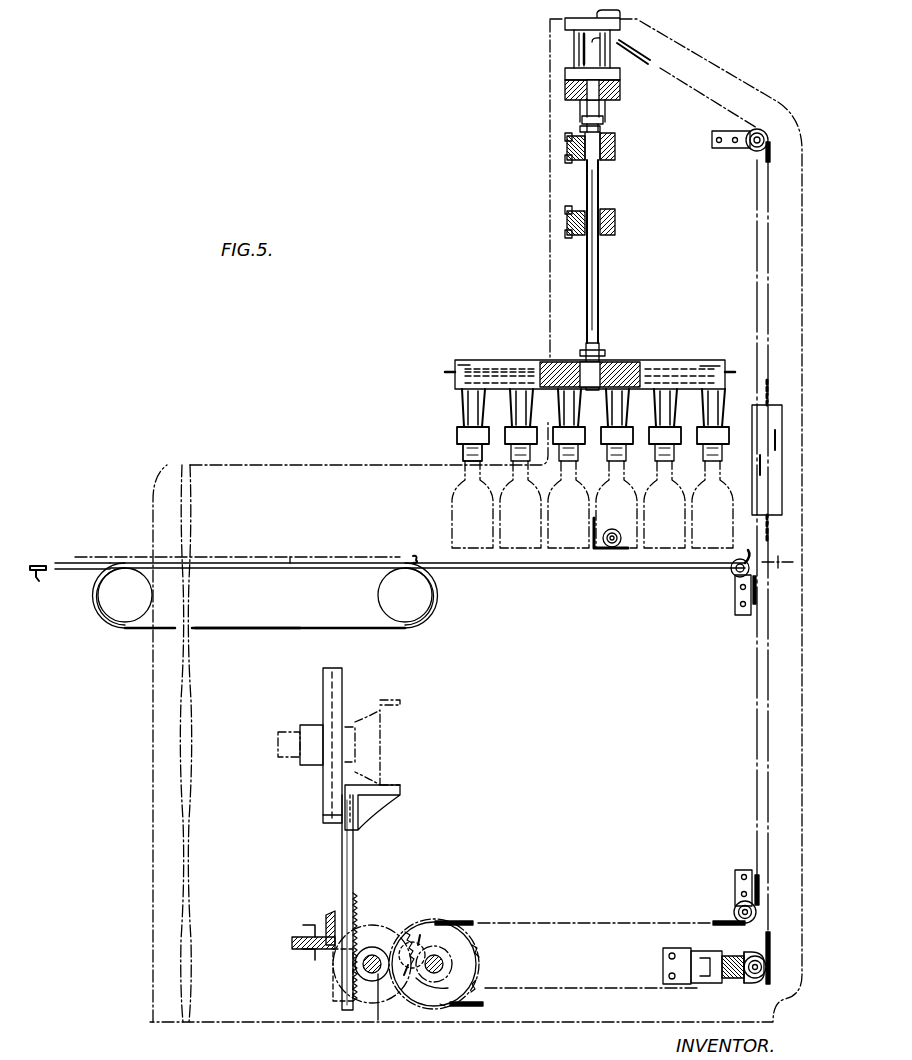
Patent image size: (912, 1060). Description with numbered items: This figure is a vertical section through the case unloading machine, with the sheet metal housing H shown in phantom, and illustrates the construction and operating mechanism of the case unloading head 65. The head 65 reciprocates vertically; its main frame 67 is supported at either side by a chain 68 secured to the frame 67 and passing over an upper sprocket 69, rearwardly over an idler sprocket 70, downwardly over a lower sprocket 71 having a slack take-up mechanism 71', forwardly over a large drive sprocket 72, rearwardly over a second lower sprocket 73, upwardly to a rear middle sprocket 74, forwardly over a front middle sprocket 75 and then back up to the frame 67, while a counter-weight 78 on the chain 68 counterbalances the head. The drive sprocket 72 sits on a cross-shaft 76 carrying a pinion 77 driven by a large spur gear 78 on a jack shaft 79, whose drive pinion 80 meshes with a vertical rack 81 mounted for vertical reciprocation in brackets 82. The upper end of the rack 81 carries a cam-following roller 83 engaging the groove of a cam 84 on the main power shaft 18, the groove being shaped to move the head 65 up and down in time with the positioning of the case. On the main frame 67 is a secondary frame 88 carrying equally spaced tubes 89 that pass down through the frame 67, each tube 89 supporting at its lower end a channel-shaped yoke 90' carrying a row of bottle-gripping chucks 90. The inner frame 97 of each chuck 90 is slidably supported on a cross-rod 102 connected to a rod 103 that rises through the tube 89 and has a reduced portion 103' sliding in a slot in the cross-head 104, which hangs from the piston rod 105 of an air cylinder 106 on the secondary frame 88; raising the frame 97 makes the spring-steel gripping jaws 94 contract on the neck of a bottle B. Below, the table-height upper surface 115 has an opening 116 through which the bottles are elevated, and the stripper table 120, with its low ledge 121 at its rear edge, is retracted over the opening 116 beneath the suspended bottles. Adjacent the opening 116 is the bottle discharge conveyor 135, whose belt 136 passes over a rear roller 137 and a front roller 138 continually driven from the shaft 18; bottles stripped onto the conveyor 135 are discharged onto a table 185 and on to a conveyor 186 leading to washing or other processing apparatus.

The upper sprocket 69 is at (618, 44).
The air cylinder 106 is at (576, 43).
The piston rod 105 is at (590, 98).
The cross-head 104 is at (603, 118).
The rod 103 is at (620, 250).
The secondary frame 88 is at (616, 148).
The idler sprocket 70 is at (763, 132).
The main frame 67 is at (616, 221).
The chains 68 is at (757, 267).
The tubes 89 is at (599, 283).
The sheet metal housing H is at (550, 226).
The case unloading head 65 is at (463, 337).
The inner frame 97 is at (565, 360).
The reduced portion 103' is at (727, 343).
The cross-rod 102 is at (460, 380).
The channel-shaped yoke 90' is at (483, 349).
The bottle-gripping chucks 90 is at (574, 425).
The gripping jaws 94 is at (463, 458).
The bottle B is at (455, 500).
The counter-weight 78 is at (770, 405).
The stripper table 120 is at (483, 560).
The opening 116 is at (588, 574).
The front pulley 138 is at (121, 616).
The rear pulley 137 is at (416, 624).
The belt 136 is at (225, 631).
The bottle discharge conveyor 135 is at (170, 644).
The table 185 is at (81, 572).
The conveyor 186 is at (37, 580).
The upper surface 115 is at (539, 561).
The low ledge 121 is at (415, 556).
The front middle sprocket 75 is at (606, 527).
The rear middle sprocket 74 is at (736, 574).
The cam 84 is at (333, 668).
The main power shaft 18 is at (283, 732).
The brackets 82 is at (378, 800).
The cam-following roller 83 is at (323, 825).
The vertical rack 81 is at (351, 867).
The drive pinion 80 is at (378, 950).
The large drive sprocket 72 is at (465, 948).
The cross-shaft 76 is at (447, 967).
The pinion 77 is at (445, 986).
The jack shaft 79 is at (383, 1009).
The second lower sprocket 73 is at (757, 909).
The lower sprocket 71 is at (733, 958).
The slack take-up mechanism 71' is at (723, 982).